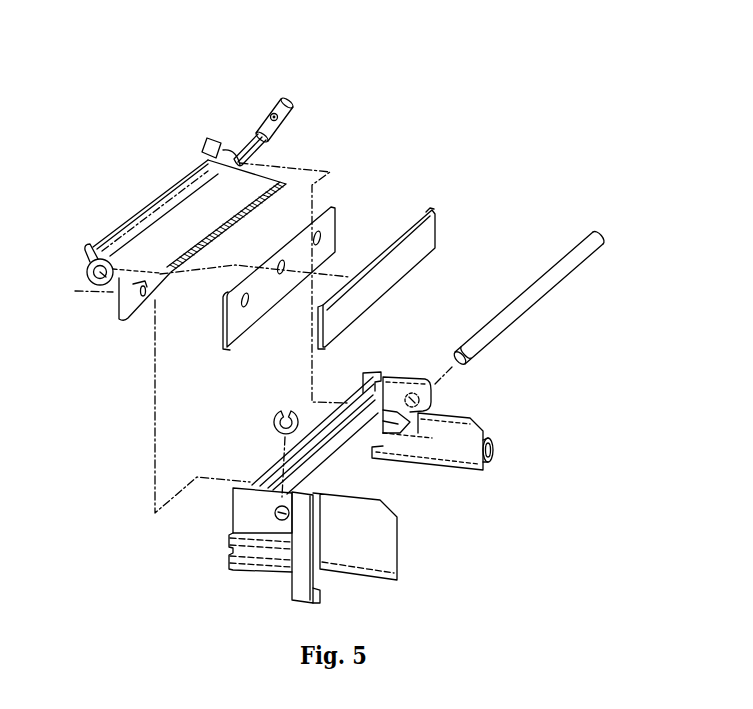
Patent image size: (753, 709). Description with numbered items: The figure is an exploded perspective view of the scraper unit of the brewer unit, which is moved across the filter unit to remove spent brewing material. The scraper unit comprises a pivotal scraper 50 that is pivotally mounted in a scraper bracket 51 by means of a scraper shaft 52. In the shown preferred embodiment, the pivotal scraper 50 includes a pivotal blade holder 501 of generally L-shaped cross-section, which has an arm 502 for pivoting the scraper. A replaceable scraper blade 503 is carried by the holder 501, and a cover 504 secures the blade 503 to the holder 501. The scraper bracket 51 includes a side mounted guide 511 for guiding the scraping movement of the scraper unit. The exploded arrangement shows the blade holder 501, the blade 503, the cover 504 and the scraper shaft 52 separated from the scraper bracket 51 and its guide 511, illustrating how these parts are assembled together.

The pivotal scraper 50 is at (232, 68).
The pivotal blade holder 501 is at (170, 195).
The arm 502 is at (253, 130).
The replaceable scraper blade 503 is at (233, 327).
The cover 504 is at (333, 323).
The scraper bracket 51 is at (243, 513).
The side mounted guide 511 is at (497, 445).
The scraper shaft 52 is at (487, 342).